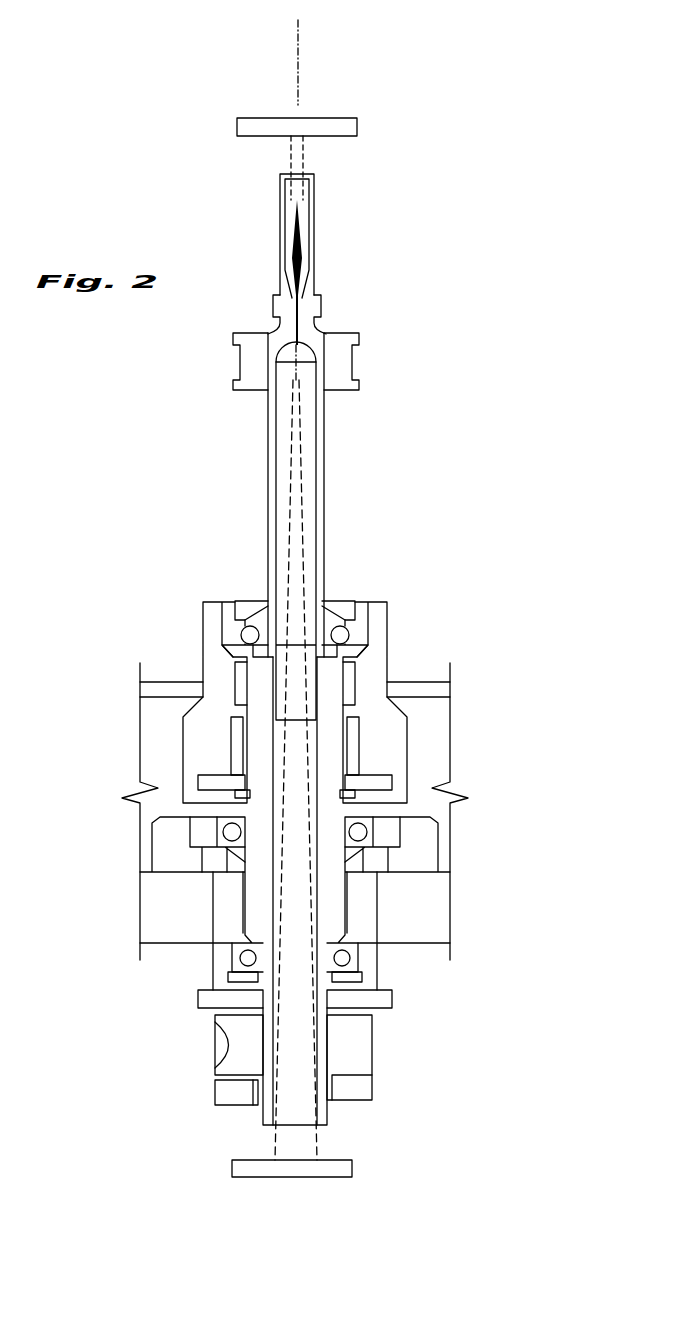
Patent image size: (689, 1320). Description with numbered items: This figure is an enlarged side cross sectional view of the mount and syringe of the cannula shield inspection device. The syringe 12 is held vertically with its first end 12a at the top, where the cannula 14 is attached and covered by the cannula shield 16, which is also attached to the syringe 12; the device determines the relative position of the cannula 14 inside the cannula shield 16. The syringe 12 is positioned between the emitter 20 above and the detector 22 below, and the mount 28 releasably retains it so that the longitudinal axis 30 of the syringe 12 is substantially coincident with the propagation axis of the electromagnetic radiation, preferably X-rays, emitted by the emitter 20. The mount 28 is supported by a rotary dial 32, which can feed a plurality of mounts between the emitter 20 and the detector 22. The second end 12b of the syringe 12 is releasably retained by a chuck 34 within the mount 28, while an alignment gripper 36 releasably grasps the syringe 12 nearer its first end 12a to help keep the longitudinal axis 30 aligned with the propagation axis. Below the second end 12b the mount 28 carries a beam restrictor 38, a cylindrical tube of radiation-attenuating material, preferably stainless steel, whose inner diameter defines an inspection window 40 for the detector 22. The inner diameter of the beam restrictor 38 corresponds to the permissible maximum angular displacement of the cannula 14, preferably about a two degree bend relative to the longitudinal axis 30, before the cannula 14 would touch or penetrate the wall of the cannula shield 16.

The syringe 12 is at (342, 474).
The first end of the syringe 12a is at (315, 327).
The second end of the syringe 12b is at (357, 612).
The cannula 14 is at (300, 217).
The cannula shield 16 is at (279, 217).
The emitter 20 is at (350, 128).
The detector 22 is at (352, 1168).
The mount 28 is at (183, 745).
The longitudinal axis of the syringe 30 is at (298, 32).
The rotary dial 32 is at (448, 893).
The chuck 34 is at (240, 615).
The alignment gripper 36 is at (355, 367).
The beam restrictor 38 is at (255, 893).
The inspection window 40 is at (268, 1150).